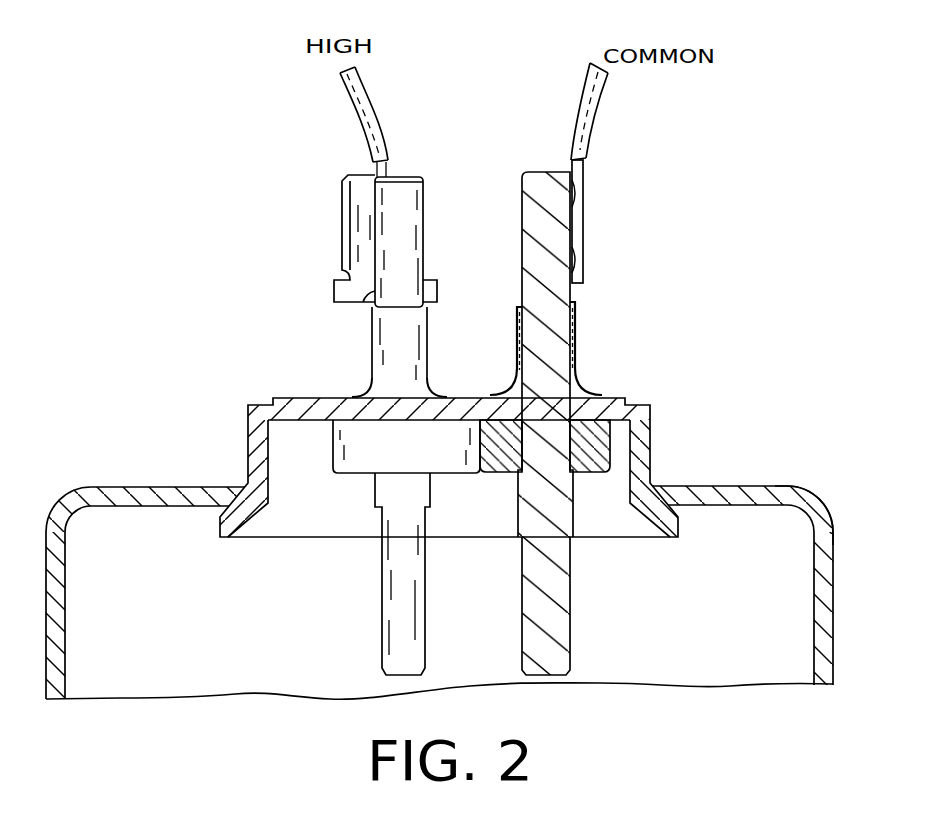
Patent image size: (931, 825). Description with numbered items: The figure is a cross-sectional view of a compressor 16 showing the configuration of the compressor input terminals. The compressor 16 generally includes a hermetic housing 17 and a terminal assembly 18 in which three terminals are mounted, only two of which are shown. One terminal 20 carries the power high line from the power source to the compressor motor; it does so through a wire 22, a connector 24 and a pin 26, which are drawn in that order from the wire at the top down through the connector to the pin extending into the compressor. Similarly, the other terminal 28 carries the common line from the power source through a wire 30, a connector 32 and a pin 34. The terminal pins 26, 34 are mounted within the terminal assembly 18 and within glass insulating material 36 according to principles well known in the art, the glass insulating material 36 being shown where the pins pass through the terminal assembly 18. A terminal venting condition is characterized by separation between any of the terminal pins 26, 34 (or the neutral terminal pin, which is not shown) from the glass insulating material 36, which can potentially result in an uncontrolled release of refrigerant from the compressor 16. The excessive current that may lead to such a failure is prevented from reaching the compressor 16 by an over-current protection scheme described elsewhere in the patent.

The compressor 16 is at (789, 407).
The hermetic housing 17 is at (823, 520).
The terminal assembly 18 is at (658, 452).
The terminal 20 is at (408, 218).
The wire 22 is at (367, 99).
The connector 24 is at (355, 243).
The pin 26 is at (398, 612).
The terminal 28 is at (524, 265).
The wire 30 is at (582, 98).
The connector 32 is at (573, 295).
The pin 34 is at (563, 612).
The glass insulating material 36 is at (378, 378).